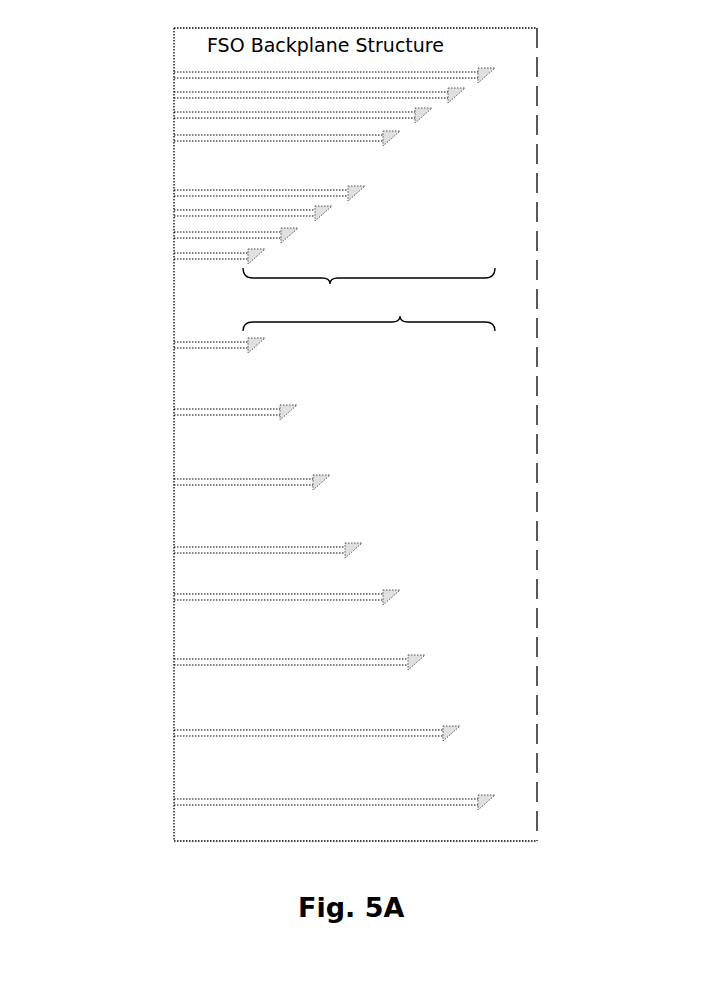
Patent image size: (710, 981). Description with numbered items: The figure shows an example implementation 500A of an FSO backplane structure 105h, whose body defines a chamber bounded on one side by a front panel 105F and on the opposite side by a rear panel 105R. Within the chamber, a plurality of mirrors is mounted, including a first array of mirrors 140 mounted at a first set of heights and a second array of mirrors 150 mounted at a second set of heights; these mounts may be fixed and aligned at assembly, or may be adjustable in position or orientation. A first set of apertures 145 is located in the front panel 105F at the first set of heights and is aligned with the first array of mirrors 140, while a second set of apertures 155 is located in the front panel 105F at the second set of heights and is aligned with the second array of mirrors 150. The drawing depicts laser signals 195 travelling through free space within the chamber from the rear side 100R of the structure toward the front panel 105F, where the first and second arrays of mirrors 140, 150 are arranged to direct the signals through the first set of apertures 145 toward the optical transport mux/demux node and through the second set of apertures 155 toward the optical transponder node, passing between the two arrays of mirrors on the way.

The FSO backplane structure 105h is at (502, 47).
The rear side of FSO system 100R is at (122, 52).
The optical beams 195 is at (174, 72).
The first set of apertures 145 is at (537, 93).
The second set of apertures 155 is at (537, 455).
The first array of mirrors 140 is at (369, 288).
The second array of mirrors 150 is at (369, 313).
The front panel 105F is at (556, 290).
The rear panel 105R is at (146, 622).
The example implementation 500A is at (145, 896).